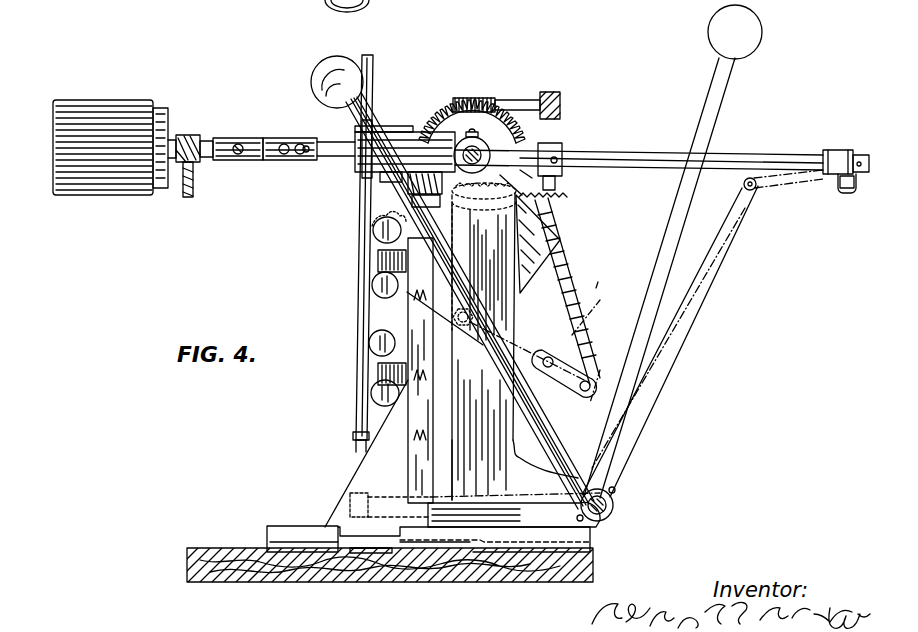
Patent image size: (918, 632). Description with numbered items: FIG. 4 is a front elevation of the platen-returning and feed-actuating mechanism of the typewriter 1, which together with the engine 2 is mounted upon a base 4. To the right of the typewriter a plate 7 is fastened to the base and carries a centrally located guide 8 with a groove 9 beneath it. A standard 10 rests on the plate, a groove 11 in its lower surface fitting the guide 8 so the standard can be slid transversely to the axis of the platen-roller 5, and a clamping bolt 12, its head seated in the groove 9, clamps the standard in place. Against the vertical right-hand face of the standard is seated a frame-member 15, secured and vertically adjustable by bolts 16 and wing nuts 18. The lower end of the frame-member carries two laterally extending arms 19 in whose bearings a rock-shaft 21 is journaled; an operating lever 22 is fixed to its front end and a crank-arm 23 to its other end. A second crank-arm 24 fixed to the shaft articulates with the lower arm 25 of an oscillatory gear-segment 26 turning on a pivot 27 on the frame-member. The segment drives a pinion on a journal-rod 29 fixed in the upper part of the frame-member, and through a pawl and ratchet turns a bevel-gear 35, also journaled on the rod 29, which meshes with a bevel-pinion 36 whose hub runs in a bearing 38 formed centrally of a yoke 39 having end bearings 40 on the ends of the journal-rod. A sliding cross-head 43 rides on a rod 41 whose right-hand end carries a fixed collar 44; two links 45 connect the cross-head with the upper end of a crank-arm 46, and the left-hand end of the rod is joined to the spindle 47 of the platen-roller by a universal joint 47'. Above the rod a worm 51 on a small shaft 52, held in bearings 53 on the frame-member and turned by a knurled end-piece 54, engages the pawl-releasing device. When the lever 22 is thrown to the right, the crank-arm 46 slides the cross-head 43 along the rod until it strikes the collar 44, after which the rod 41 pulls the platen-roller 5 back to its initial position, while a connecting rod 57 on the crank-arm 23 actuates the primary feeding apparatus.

The typewriter 1 is at (190, 198).
The engine 2 is at (598, 272).
The base 4 is at (210, 548).
The platen-roller 5 is at (96, 100).
The plate 7 is at (282, 524).
The guide 8 is at (322, 520).
The groove 9 is at (386, 556).
The standard 10 is at (419, 370).
The groove 11 is at (484, 544).
The clamping bolt 12 is at (362, 556).
The frame-member 15 is at (467, 422).
The bolts 16 is at (378, 264).
The wing nuts 18 is at (372, 292).
The laterally extending arms 19 is at (552, 524).
The rock-shaft 21 is at (614, 510).
The operating lever 22 is at (311, 84).
The crank-arm 23 is at (444, 492).
The crank-arm 24 is at (594, 380).
The lower arm 25 is at (574, 354).
The oscillatory gear-segment 26 is at (560, 236).
The pivot 27 is at (458, 328).
The journal-rod 29 is at (505, 132).
The bevel-gear 35 is at (444, 110).
The bevel-pinion 36 is at (426, 140).
The bearing 38 is at (372, 104).
The yoke 39 is at (355, 178).
The end bearings 40 is at (470, 210).
The rod 41 is at (762, 158).
The sliding cross-head 43 is at (562, 148).
The fixed collar 44 is at (856, 190).
The links 45 is at (556, 181).
The crank-arm 46 is at (540, 327).
The spindle 47 is at (231, 128).
The universal joint 47' is at (309, 134).
The worm 51 is at (470, 110).
The small shaft 52 is at (545, 98).
The bearings 53 is at (455, 98).
The knurled end-piece 54 is at (562, 96).
The connecting rod 57 is at (356, 348).